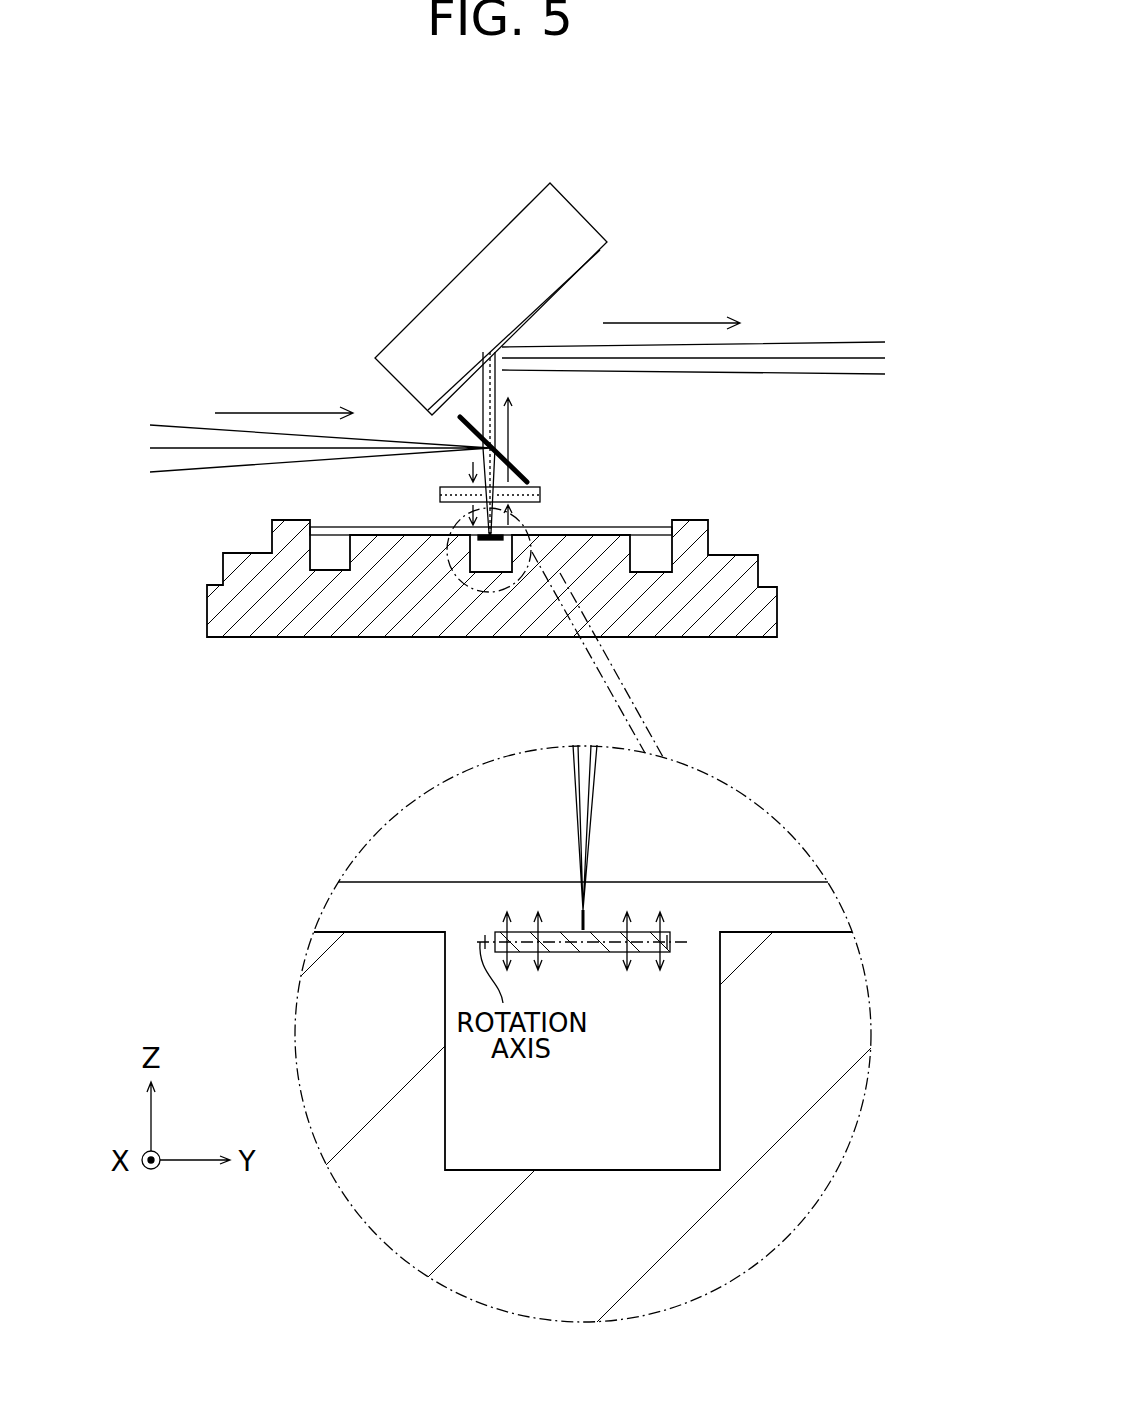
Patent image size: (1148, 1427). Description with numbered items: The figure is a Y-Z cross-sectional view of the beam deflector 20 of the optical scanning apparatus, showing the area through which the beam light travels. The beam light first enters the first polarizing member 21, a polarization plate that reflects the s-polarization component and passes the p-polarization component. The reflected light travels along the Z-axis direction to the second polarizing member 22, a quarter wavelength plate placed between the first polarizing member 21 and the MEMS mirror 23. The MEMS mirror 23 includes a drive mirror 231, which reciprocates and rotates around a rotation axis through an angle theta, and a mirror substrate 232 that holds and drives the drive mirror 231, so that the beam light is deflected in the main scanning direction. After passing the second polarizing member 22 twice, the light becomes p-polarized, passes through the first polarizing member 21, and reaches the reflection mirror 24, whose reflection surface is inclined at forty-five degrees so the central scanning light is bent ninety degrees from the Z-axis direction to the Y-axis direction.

The beam deflector 20 is at (714, 188).
The first polarizing member 21 is at (525, 472).
The second polarizing member 22 is at (545, 493).
The MEMS mirror 23 is at (492, 736).
The drive mirror 231 is at (535, 743).
The mirror substrate 232 is at (313, 638).
The reflection mirror 24 is at (541, 200).